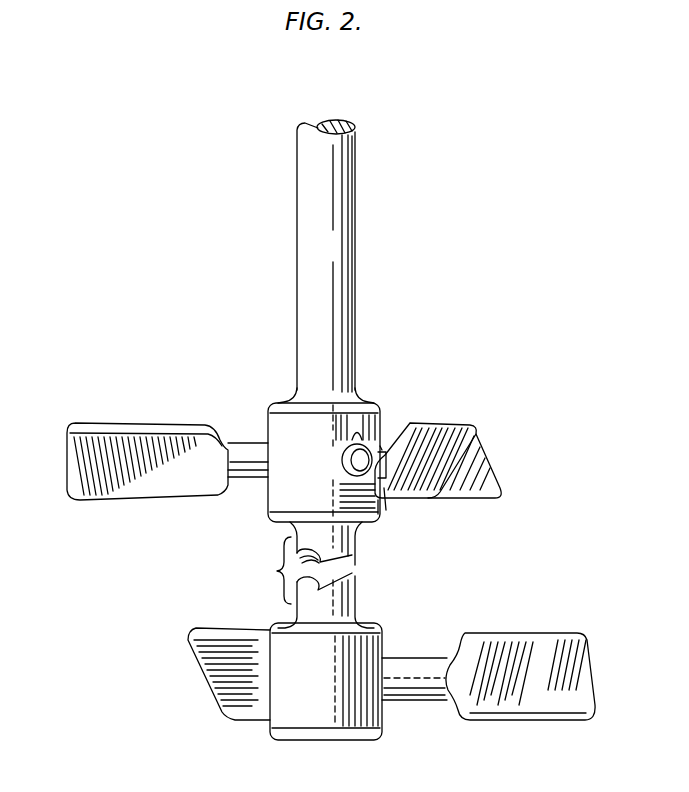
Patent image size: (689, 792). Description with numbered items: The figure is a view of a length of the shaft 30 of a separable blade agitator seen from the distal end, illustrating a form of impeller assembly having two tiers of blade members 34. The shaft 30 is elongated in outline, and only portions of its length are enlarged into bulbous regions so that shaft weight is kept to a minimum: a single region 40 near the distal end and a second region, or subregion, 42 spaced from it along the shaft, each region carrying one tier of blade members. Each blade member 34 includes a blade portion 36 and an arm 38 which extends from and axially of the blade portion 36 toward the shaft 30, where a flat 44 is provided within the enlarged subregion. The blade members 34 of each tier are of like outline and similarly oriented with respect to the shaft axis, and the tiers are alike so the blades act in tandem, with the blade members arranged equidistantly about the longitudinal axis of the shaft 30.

The shaft 30 is at (345, 270).
The blade member 34 is at (185, 512).
The blade portion 36 is at (150, 440).
The arm 38 is at (415, 660).
The region 40 is at (352, 726).
The second region 42 is at (372, 412).
The flat 44 is at (378, 522).